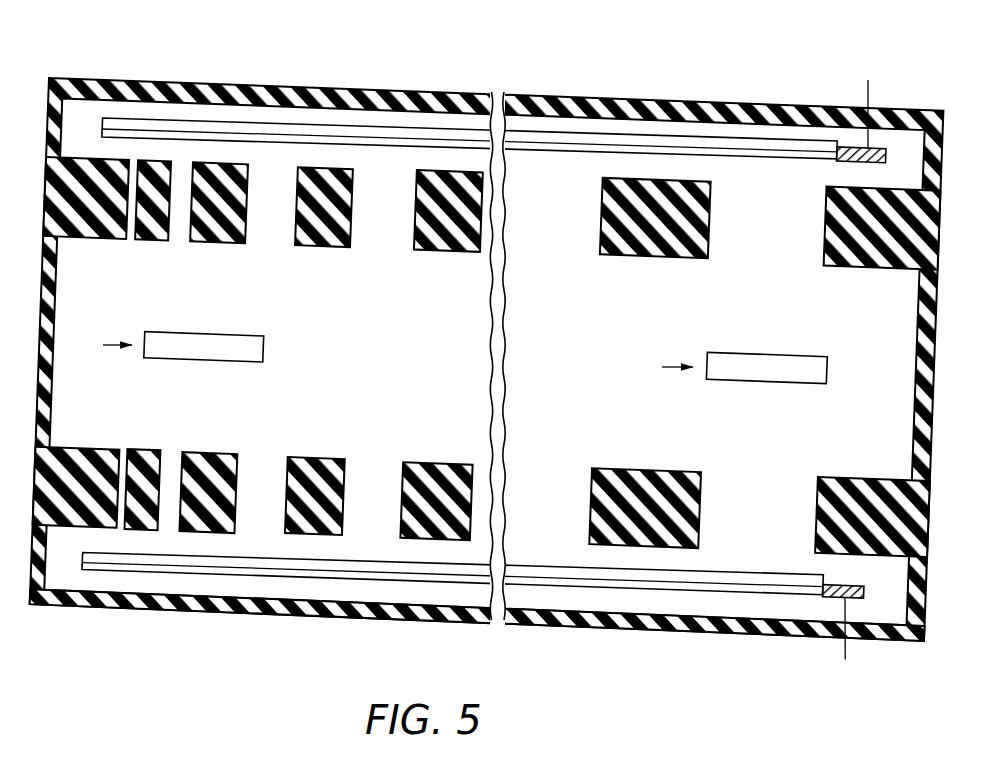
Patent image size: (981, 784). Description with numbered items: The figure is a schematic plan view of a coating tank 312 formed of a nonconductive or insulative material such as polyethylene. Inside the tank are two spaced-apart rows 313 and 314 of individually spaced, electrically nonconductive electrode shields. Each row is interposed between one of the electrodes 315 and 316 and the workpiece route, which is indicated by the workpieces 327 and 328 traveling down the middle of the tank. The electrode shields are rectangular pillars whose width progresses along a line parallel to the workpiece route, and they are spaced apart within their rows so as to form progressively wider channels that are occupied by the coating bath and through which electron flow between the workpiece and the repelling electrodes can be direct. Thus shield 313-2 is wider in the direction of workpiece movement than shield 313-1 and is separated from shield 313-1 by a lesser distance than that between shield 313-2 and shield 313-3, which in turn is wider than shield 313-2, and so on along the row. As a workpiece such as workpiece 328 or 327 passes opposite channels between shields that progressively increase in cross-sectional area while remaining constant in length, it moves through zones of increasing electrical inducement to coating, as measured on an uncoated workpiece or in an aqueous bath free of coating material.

The coating tank 312 is at (522, 95).
The row of electrode shields 313 is at (668, 279).
The electrode shield 313-1 is at (155, 241).
The electrode shield 313-2 is at (210, 243).
The electrode shield 313-3 is at (333, 249).
The row of electrode shields 314 is at (643, 466).
The electrode 315 is at (838, 148).
The electrode 316 is at (830, 598).
The workpiece 327 is at (762, 383).
The workpiece 328 is at (203, 363).